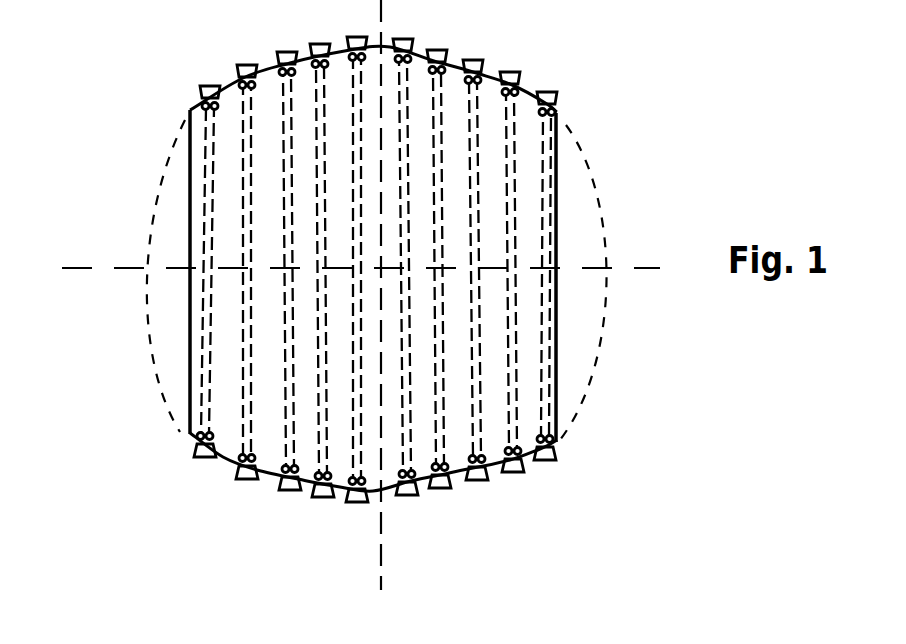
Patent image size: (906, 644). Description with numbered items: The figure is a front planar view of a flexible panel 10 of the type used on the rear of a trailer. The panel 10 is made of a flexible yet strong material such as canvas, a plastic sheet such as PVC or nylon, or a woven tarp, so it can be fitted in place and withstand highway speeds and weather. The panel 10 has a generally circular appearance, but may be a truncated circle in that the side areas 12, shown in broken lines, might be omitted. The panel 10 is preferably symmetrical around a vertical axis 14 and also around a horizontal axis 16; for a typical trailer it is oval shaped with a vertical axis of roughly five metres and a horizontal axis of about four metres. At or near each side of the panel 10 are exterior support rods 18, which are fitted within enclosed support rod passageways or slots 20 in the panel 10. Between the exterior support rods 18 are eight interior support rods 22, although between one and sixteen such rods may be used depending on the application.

The flexible panel 10 is at (497, 430).
The side areas 12 is at (165, 325).
The vertical axis 14 is at (387, 572).
The horizontal axis 16 is at (92, 266).
The exterior support rods 18 is at (208, 400).
The support rod passageways 20 is at (200, 440).
The interior support rods 22 is at (242, 103).